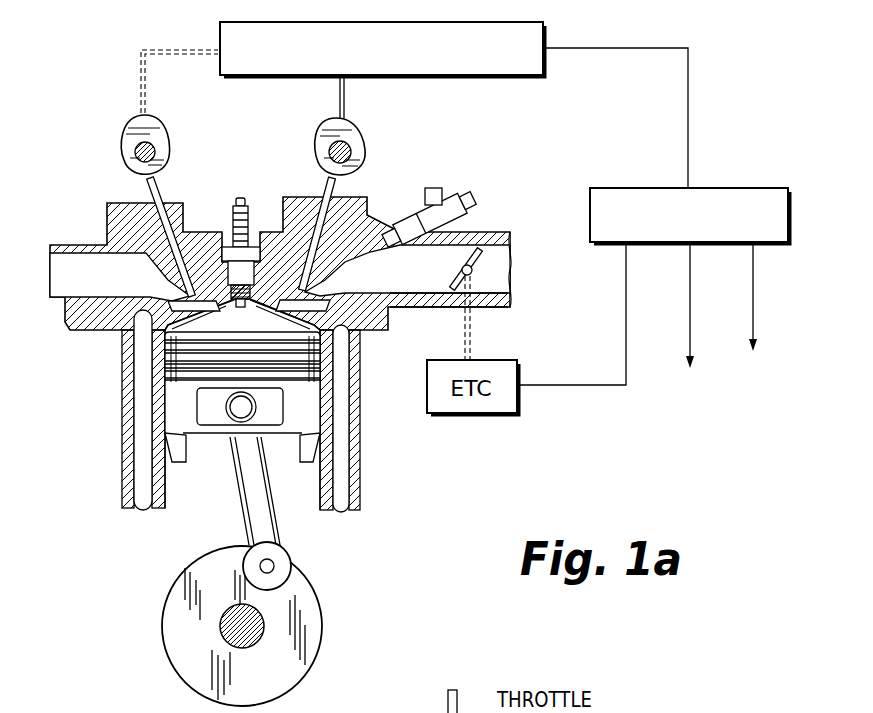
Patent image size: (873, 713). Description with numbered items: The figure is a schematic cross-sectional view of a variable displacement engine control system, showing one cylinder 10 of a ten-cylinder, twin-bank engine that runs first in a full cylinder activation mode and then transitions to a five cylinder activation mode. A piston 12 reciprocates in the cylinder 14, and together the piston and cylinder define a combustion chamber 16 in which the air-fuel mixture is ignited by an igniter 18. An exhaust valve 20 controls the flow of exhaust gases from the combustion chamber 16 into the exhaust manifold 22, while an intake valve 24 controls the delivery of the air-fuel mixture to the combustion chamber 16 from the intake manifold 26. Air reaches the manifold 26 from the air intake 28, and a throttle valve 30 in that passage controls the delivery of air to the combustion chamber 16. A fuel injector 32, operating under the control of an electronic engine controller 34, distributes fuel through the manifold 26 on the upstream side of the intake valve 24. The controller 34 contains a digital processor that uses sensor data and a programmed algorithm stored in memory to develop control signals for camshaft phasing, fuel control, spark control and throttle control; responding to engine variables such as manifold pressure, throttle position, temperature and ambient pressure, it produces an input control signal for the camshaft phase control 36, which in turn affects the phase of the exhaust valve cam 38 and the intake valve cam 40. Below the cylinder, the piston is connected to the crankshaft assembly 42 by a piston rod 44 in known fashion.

The cylinder 10 is at (114, 383).
The piston 12 is at (170, 412).
The cylinder 14 is at (160, 487).
The combustion chamber 16 is at (200, 323).
The igniter 18 is at (232, 217).
The exhaust valve 20 is at (177, 290).
The exhaust manifold 22 is at (82, 263).
The intake valve 24 is at (300, 293).
The intake manifold 26 is at (418, 280).
The air intake 28 is at (502, 275).
The throttle valve 30 is at (457, 278).
The fuel injector 32 is at (413, 213).
The electronic engine controller 34 is at (725, 187).
The camshaft phase control 36 is at (488, 78).
The exhaust valve cam 38 is at (130, 128).
The intake valve cam 40 is at (314, 132).
The crankshaft assembly 42 is at (312, 612).
The piston rod 44 is at (253, 515).